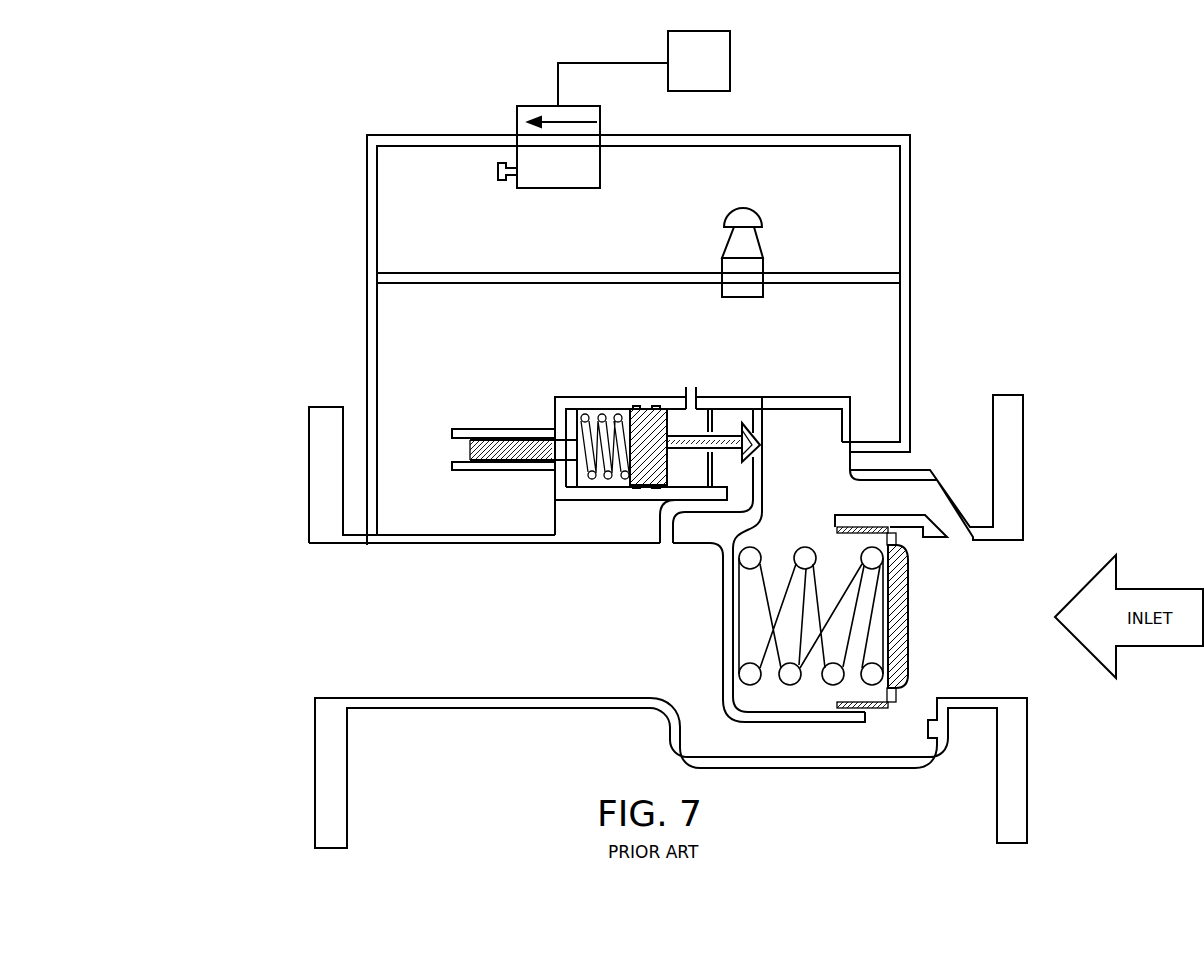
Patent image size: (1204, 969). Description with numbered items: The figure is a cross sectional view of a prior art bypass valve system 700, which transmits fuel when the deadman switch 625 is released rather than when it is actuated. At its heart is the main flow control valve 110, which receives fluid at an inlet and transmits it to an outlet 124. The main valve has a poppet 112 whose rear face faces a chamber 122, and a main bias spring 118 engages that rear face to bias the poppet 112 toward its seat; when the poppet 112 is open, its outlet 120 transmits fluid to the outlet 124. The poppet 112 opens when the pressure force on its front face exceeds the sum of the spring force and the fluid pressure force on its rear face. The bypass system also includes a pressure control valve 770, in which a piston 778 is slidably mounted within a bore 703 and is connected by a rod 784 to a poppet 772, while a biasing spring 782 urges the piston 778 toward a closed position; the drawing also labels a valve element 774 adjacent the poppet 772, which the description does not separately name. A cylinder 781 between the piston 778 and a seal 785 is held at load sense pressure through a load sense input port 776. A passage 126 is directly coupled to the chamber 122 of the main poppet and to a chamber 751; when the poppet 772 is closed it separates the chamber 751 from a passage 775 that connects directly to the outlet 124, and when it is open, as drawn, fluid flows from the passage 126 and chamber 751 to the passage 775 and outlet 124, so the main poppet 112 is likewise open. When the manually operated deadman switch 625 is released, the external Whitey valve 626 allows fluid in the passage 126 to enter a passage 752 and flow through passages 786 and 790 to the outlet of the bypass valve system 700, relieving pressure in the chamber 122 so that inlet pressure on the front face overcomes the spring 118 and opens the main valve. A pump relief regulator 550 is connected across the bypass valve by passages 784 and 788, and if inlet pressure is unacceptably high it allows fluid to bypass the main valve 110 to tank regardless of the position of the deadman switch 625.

The bypass valve system 700 is at (328, 160).
The deadman switch 625 is at (730, 54).
The external Whitey valve 626 is at (560, 188).
The passage 786 is at (830, 148).
The passage 788 is at (433, 273).
The passage 790 is at (400, 322).
The rod 784 is at (824, 284).
The pump relief regulator 550 is at (772, 242).
The bore 703 is at (586, 488).
The load sense input port 776 is at (693, 385).
The pressure control valve 770 is at (438, 448).
The biasing spring 782 is at (603, 410).
The piston 778 is at (632, 410).
The cylinder 781 is at (677, 417).
The seal 785 is at (712, 456).
The valve member 774 is at (747, 420).
The poppet 772 is at (760, 437).
The chamber 751 is at (777, 402).
The passage 752 is at (840, 447).
The passage 775 is at (672, 510).
The passage 126 is at (912, 488).
The chamber 122 is at (748, 536).
The main flow control valve 110 is at (938, 663).
The poppet 112 is at (908, 603).
The main bias spring 118 is at (783, 685).
The outlet 120 is at (907, 748).
The outlet 124 is at (285, 634).